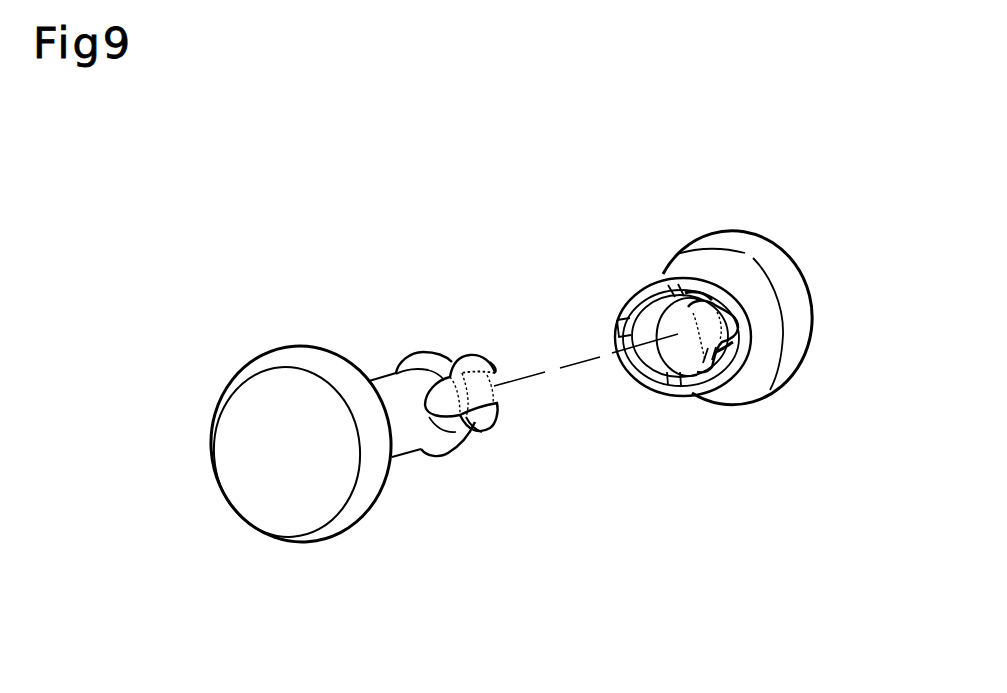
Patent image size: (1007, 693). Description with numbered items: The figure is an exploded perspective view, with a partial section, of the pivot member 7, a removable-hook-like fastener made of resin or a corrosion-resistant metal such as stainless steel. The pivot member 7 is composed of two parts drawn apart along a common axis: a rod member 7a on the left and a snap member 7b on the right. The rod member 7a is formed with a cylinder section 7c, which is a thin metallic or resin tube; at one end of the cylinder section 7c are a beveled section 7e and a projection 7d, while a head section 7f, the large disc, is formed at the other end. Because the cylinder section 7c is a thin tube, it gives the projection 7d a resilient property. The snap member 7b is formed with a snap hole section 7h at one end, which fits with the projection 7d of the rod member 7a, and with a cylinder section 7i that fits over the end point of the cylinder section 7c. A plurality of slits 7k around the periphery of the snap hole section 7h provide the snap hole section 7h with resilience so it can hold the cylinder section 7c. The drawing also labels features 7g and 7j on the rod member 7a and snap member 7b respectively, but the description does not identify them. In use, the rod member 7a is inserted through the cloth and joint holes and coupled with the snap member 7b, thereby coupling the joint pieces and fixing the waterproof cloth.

The pivot member 7 is at (608, 266).
The rod member 7a is at (330, 540).
The snap member 7b is at (758, 408).
The cylinder section 7c is at (405, 441).
The projection 7d is at (446, 355).
The beveled section 7e is at (500, 413).
The head section 7f is at (217, 448).
The engaging projection 7g is at (477, 430).
The snap hole section 7h is at (690, 397).
The cylinder section 7i is at (646, 300).
The boss flange 7j is at (806, 288).
The slits 7k is at (603, 360).